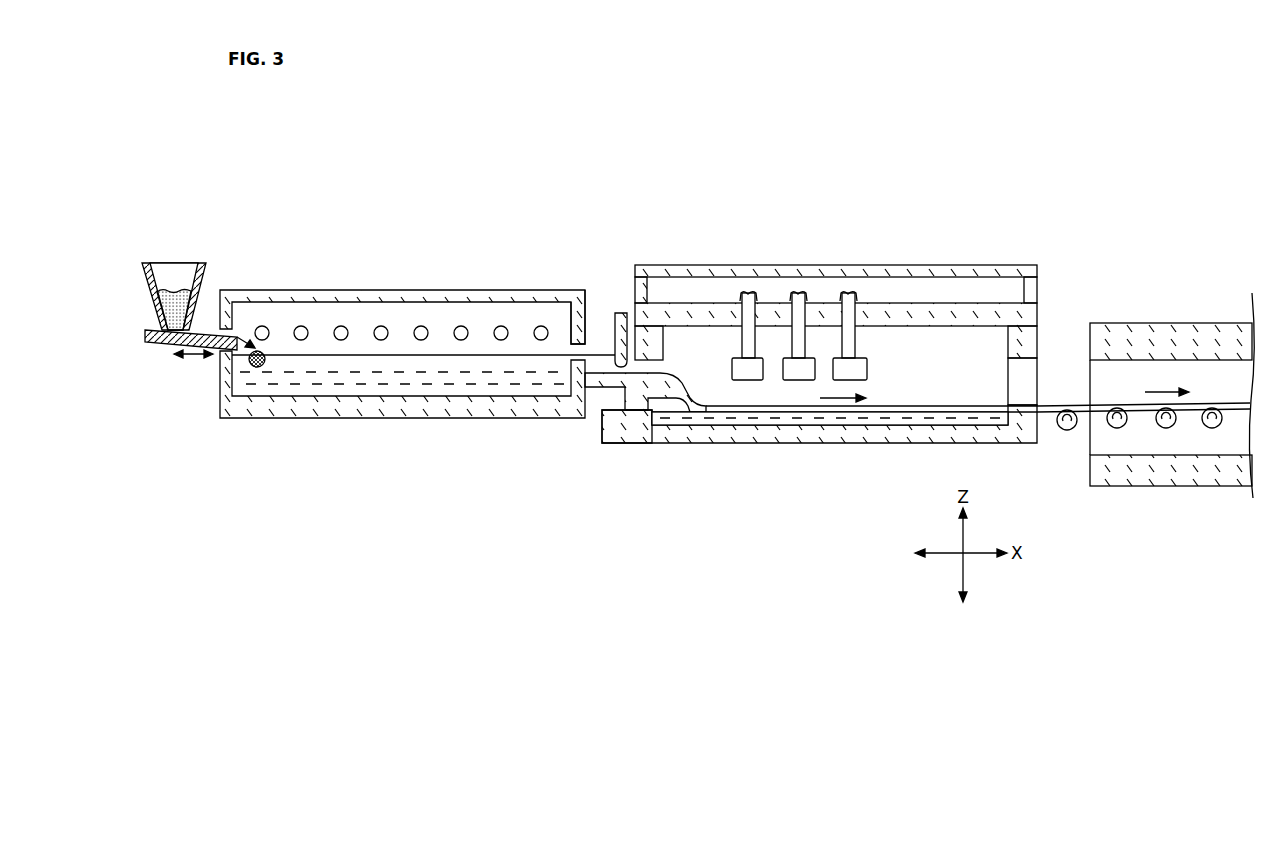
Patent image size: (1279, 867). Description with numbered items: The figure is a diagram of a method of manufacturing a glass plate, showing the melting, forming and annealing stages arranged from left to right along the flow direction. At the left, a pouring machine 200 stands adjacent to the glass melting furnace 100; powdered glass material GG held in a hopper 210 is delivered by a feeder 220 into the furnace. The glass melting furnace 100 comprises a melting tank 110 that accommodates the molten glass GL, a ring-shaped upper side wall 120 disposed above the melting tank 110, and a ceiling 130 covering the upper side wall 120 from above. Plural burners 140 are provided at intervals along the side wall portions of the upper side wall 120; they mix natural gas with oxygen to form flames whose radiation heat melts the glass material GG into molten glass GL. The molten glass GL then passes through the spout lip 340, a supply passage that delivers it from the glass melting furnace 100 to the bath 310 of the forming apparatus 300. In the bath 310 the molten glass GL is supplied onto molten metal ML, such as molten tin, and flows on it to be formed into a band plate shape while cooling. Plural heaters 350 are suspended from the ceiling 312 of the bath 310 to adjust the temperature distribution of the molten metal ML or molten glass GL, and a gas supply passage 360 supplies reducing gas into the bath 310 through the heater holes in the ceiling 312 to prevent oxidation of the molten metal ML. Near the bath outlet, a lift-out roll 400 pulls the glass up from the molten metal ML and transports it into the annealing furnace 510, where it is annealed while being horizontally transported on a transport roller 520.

The glass melting furnace 100 is at (218, 235).
The melting tank 110 is at (220, 385).
The upper side wall 120 is at (571, 338).
The ceiling 130 is at (503, 290).
The burners 140 is at (461, 325).
The pouring machine 200 is at (172, 250).
The hopper 210 is at (142, 289).
The feeder 220 is at (145, 336).
The forming apparatus 300 is at (628, 235).
The bath 310 is at (752, 443).
The ceiling of the bath 312 is at (697, 318).
The spout lip 340 is at (634, 398).
The heaters 350 is at (750, 382).
The gas supply passage 360 is at (758, 310).
The lift-out roll 400 is at (1067, 431).
The annealing furnace 510 is at (1172, 410).
The transport roller 520 is at (1118, 429).
The glass material GG is at (257, 367).
The molten glass GL is at (497, 392).
The molten metal ML is at (797, 420).